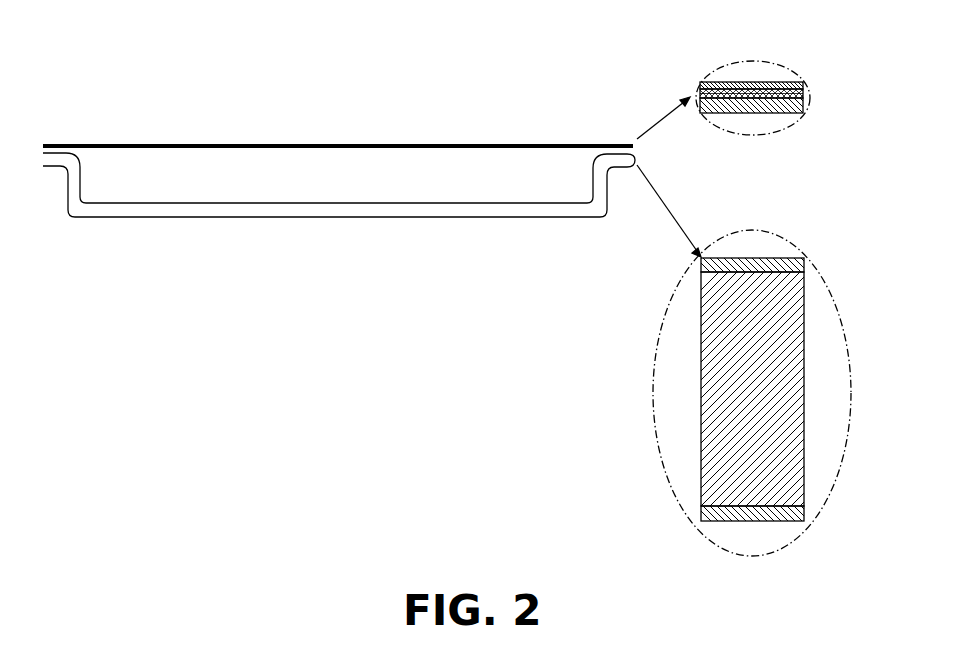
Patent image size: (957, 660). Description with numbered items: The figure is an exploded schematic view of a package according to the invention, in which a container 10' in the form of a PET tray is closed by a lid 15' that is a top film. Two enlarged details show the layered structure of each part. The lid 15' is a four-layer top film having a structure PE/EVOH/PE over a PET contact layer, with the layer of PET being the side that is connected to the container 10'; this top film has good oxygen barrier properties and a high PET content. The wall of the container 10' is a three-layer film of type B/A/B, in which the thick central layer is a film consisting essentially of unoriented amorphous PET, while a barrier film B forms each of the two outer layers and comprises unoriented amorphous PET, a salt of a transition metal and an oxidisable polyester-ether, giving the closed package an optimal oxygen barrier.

The container 10' is at (339, 234).
The lid 15' is at (338, 109).
The polyethylene layer PE is at (727, 85).
The EVOH layer EVOH is at (700, 91).
The unoriented amorphous PET film PET is at (717, 105).
The barrier film B is at (717, 271).